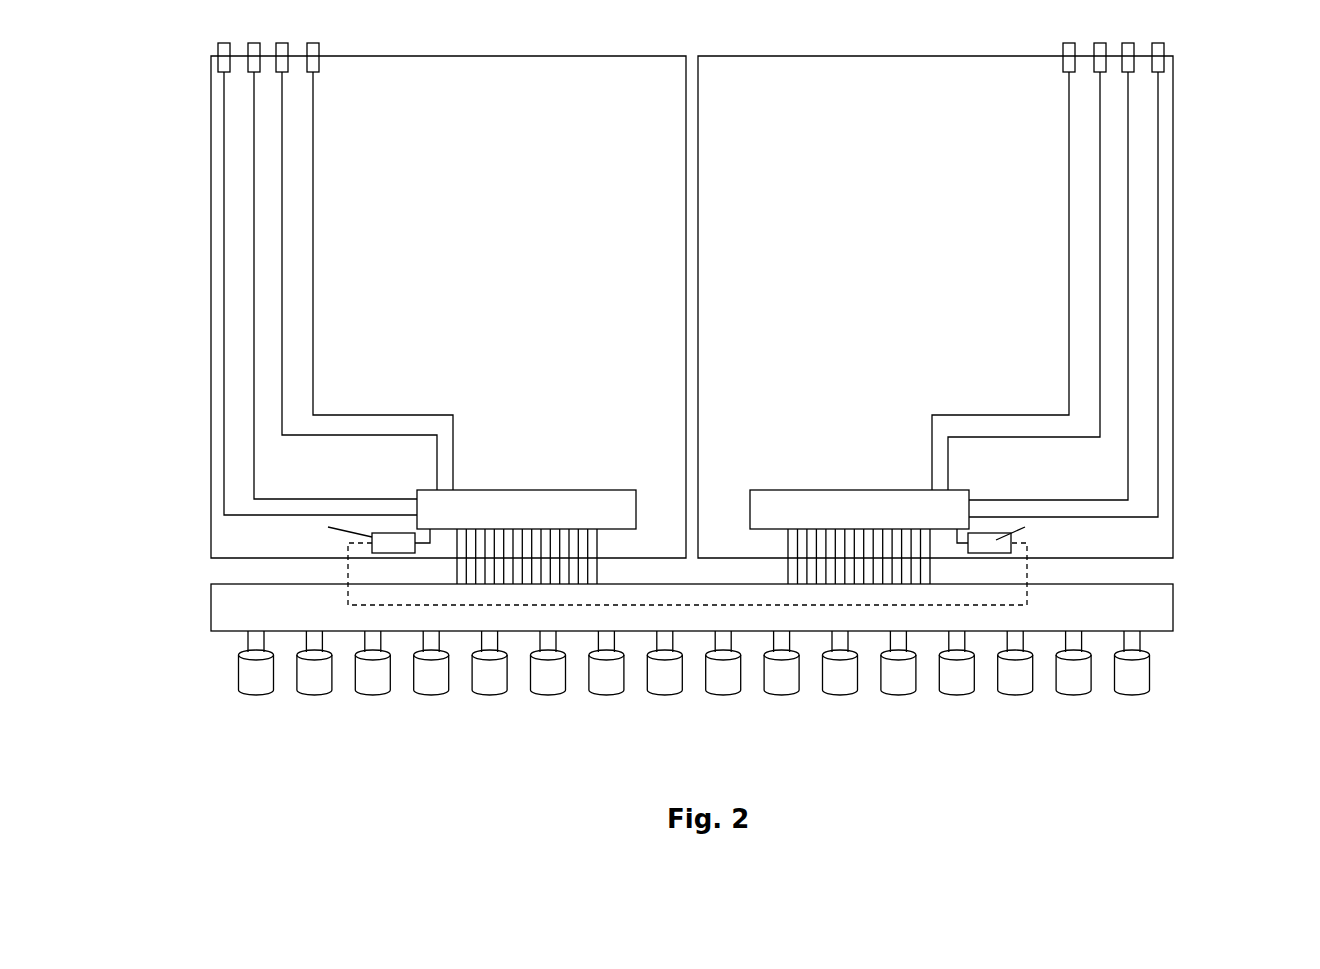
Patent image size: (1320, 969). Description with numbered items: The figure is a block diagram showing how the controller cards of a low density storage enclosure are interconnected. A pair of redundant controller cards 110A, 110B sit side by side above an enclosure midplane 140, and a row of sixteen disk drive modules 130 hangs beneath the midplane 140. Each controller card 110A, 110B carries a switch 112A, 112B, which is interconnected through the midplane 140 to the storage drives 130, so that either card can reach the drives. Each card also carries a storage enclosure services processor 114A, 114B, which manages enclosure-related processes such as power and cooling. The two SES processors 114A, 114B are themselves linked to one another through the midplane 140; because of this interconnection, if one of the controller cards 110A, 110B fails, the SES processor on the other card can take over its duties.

The controller card 110A is at (448, 300).
The controller card 110B is at (935, 300).
The switch 112A is at (574, 488).
The switch 112B is at (800, 488).
The storage enclosure services (SES) processor 114A is at (373, 535).
The storage enclosure services (SES) processor 114B is at (1005, 545).
The disk drive modules 130 is at (1168, 676).
The enclosure midplane 140 is at (692, 607).